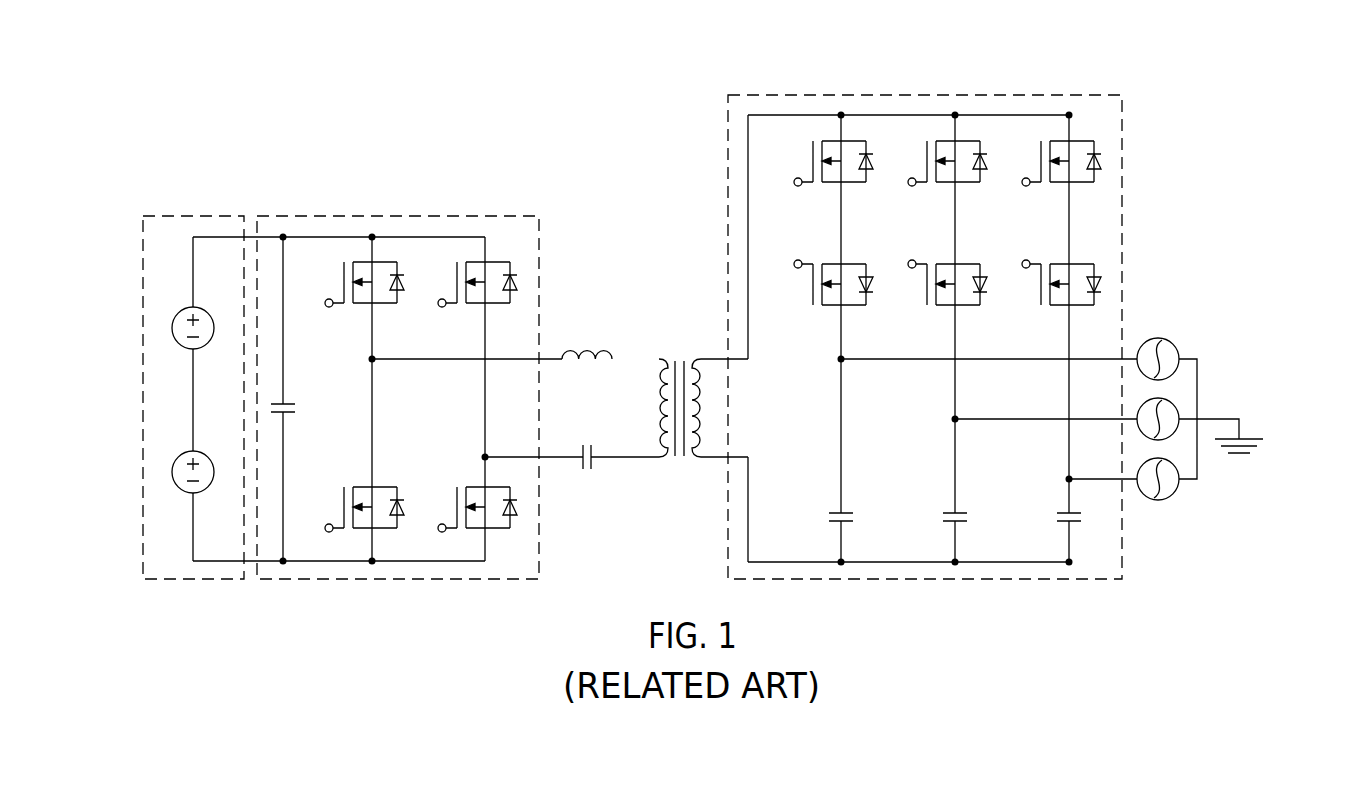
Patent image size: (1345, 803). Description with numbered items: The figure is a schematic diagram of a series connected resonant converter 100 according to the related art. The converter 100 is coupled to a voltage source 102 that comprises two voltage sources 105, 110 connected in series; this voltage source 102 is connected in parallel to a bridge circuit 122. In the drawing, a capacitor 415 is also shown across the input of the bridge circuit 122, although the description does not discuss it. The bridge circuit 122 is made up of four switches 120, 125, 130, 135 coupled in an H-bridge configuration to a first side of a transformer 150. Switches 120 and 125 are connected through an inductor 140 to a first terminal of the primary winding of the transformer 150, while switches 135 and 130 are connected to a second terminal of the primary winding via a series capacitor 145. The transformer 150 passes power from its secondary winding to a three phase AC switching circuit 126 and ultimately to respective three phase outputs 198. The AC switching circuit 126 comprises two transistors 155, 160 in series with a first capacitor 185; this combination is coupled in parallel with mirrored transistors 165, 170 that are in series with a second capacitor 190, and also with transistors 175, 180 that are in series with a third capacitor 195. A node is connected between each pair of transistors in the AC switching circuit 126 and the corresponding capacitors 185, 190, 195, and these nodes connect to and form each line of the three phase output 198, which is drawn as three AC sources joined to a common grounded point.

The converter 100 is at (640, 38).
The voltage source 102 is at (153, 181).
The voltage source 105 is at (172, 328).
The voltage source 110 is at (172, 472).
The bridge circuit 122 is at (497, 187).
The switch 120 is at (343, 290).
The switch 125 is at (343, 516).
The switch 130 is at (457, 516).
The switch 135 is at (457, 290).
The DC link capacitor 415 is at (292, 406).
The inductor 140 is at (588, 350).
The series capacitor 145 is at (583, 468).
The transformer 150 is at (655, 405).
The three phase AC switching circuit 126 is at (1079, 66).
The transistor 155 is at (812, 169).
The transistor 160 is at (812, 292).
The transistor 165 is at (926, 169).
The transistor 170 is at (926, 292).
The transistor 175 is at (1040, 169).
The transistor 180 is at (1040, 292).
The first capacitor 185 is at (830, 513).
The second capacitor 190 is at (944, 513).
The third capacitor 195 is at (1058, 513).
The three phase outputs 198 is at (1273, 359).